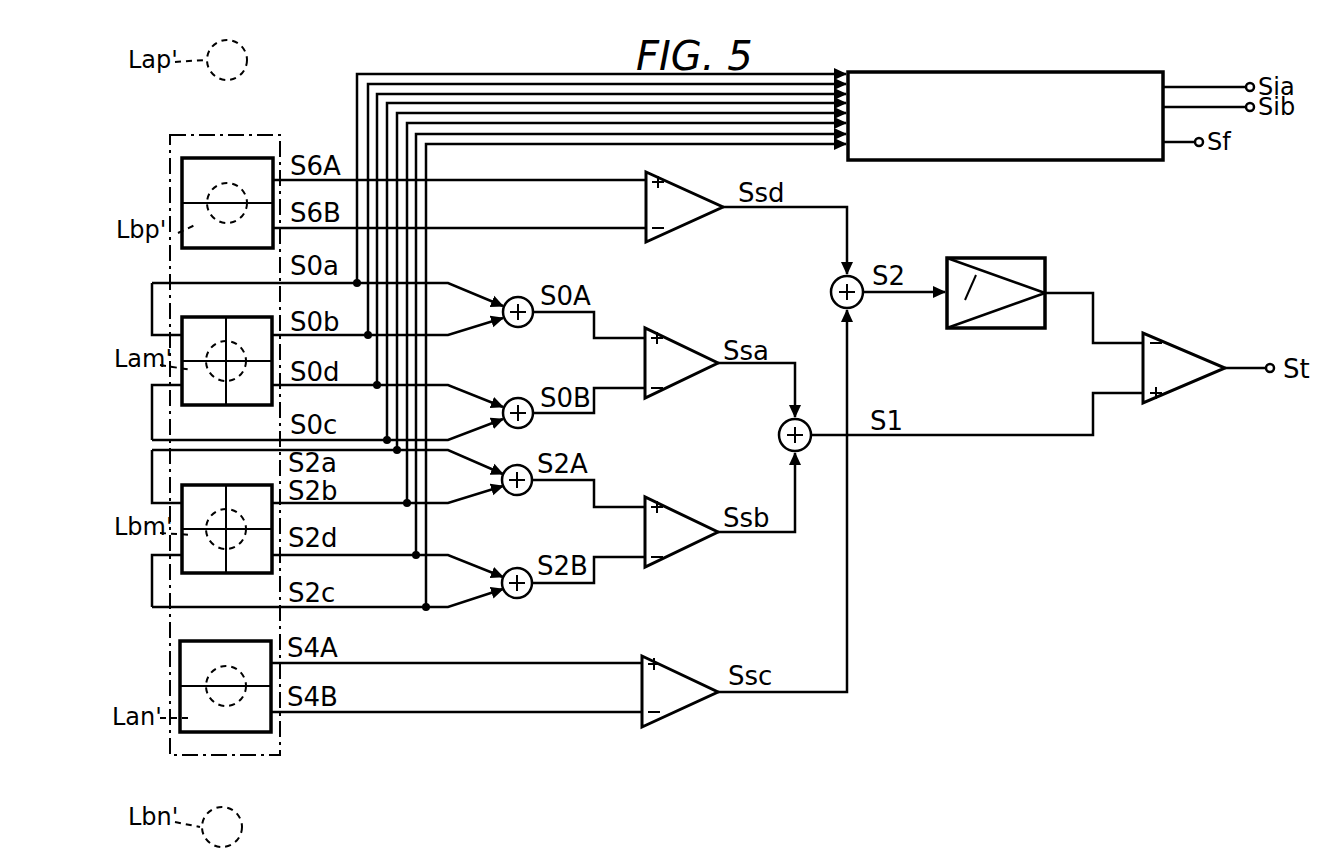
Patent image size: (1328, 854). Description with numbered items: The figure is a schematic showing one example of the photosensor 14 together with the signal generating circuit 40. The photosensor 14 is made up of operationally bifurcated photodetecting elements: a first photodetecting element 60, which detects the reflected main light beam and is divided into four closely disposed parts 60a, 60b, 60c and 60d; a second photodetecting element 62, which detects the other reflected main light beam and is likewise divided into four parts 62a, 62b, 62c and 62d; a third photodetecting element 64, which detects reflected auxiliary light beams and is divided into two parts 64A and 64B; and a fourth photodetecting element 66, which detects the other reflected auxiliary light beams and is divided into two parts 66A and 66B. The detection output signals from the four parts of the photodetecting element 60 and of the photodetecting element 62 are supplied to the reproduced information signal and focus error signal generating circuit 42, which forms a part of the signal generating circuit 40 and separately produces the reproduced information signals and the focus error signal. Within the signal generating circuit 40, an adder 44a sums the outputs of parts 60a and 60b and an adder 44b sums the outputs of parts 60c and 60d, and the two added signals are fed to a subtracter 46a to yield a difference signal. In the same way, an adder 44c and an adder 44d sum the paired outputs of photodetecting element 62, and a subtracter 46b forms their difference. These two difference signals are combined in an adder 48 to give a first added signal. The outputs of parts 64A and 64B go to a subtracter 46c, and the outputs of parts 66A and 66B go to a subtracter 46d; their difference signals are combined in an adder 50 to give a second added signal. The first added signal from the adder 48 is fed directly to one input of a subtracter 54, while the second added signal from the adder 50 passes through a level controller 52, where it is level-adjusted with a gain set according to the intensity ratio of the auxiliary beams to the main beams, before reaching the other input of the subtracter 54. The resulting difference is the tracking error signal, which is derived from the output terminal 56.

The photosensor 14 is at (279, 735).
The signal generating circuit 40 is at (958, 572).
The reproduced information signal and focus error signal generating circuit 42 is at (1117, 162).
The adder 44a is at (518, 297).
The adder 44b is at (518, 398).
The adder 44c is at (529, 492).
The adder 44d is at (517, 568).
The subtracter 46a is at (685, 345).
The subtracter 46b is at (683, 512).
The subtracter 46c is at (680, 670).
The subtracter 46d is at (691, 222).
The adder 48 is at (779, 435).
The adder 50 is at (832, 286).
The level controller 52 is at (1012, 258).
The subtracter 54 is at (1195, 352).
The output terminal 56 is at (1266, 372).
The photodetecting element 60 is at (227, 374).
The part 60a is at (204, 339).
The part 60b is at (249, 339).
The part 60c is at (204, 383).
The part 60d is at (212, 420).
The photodetecting element 62 is at (227, 543).
The part 62a is at (204, 507).
The part 62b is at (249, 507).
The part 62c is at (204, 551).
The part 62d is at (212, 590).
The photodetecting element 64 is at (194, 685).
The part 64A is at (225, 663).
The part 64B is at (225, 709).
The photodetecting element 66 is at (195, 202).
The part 66A is at (227, 180).
The part 66B is at (227, 225).